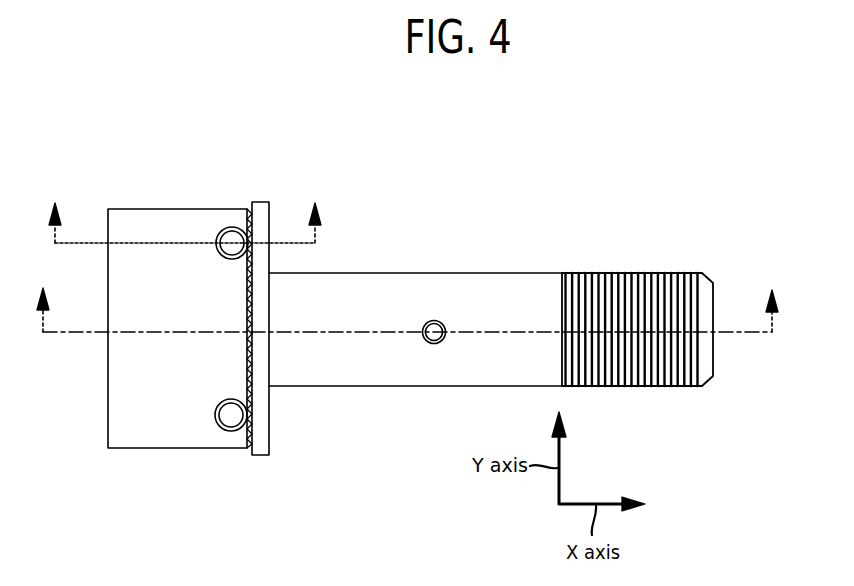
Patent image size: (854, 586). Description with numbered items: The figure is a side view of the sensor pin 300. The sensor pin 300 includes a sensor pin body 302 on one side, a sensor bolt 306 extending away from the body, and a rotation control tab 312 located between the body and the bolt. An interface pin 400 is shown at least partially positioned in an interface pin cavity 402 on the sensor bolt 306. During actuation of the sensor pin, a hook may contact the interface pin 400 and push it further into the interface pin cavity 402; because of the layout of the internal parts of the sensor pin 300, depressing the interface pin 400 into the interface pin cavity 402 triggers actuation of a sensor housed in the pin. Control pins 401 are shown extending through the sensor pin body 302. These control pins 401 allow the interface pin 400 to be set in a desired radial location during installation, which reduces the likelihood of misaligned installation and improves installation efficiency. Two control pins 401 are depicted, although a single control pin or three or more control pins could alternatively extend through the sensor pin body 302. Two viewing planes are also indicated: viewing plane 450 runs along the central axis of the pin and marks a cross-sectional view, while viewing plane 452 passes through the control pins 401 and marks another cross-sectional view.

The sensor pin 300 is at (736, 132).
The sensor pin body 302 is at (98, 163).
The sensor bolt 306 is at (713, 163).
The rotation control tab 312 is at (263, 418).
The interface pin 400 is at (433, 321).
The control pins 401 is at (229, 227).
The interface pin cavity 402 is at (425, 325).
The viewing plane 450 is at (92, 334).
The viewing plane 452 is at (92, 246).